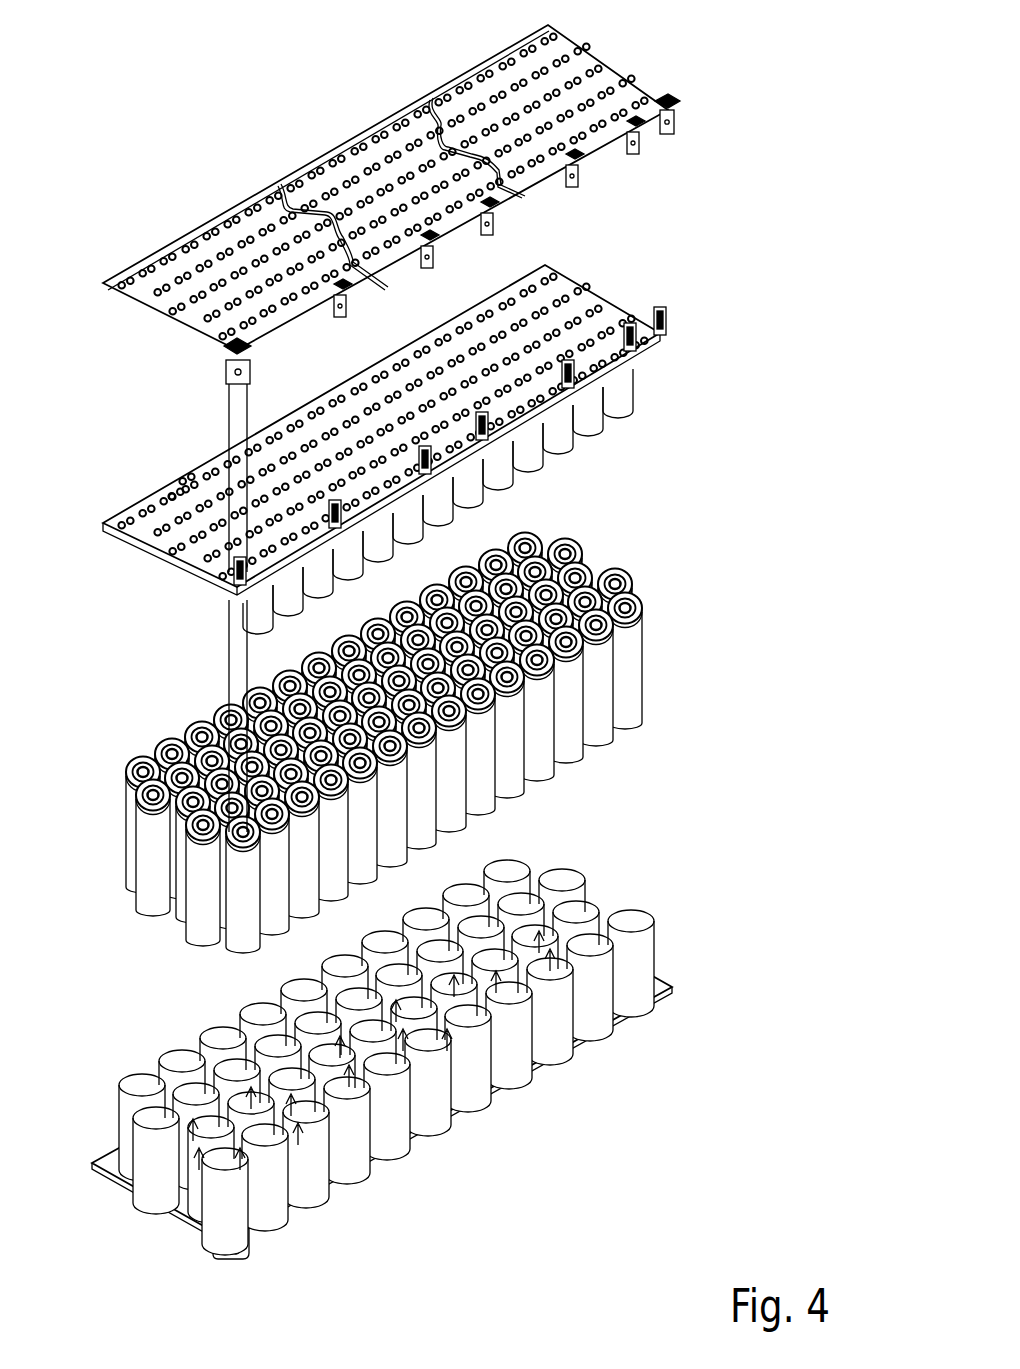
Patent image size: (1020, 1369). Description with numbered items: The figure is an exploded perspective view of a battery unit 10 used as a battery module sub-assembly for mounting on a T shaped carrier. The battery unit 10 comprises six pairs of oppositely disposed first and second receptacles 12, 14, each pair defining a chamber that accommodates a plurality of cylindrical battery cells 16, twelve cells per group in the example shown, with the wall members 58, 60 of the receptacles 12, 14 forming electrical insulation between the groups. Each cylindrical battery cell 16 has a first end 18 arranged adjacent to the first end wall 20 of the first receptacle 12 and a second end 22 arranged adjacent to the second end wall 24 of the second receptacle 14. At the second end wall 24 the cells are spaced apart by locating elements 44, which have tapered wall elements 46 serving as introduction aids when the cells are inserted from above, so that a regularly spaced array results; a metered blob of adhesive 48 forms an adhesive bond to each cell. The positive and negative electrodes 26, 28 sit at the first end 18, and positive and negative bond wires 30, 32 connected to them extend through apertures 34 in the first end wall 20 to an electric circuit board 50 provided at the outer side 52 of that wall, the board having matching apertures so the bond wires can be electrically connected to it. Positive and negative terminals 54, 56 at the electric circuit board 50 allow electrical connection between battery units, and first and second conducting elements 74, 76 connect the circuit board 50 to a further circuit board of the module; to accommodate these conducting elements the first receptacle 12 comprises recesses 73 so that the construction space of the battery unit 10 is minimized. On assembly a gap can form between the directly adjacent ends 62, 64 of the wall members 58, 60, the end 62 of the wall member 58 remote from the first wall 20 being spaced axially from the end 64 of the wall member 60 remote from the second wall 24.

The battery unit 10 is at (756, 215).
The first receptacle 12 is at (605, 312).
The second receptacle 14 is at (678, 991).
The cylindrical battery cells 16 is at (632, 700).
The first end 18 is at (640, 598).
The first end wall 20 is at (126, 498).
The second end 22 is at (578, 762).
The second end wall 24 is at (590, 1027).
The positive electrode 26 is at (230, 718).
The negative electrode 28 is at (153, 794).
The positive bond wire 30 is at (242, 334).
The negative bond wire 32 is at (226, 341).
The apertures 34 is at (172, 490).
The locating elements 44 is at (576, 940).
The tapered wall elements 46 is at (312, 1105).
The adhesive 48 is at (462, 958).
The electric circuit board 50 is at (585, 62).
The outer side 52 is at (666, 366).
The positive terminal 54 is at (690, 108).
The negative terminal 56 is at (228, 374).
The wall member 58 is at (612, 412).
The wall member 60 is at (656, 984).
The end 62 is at (586, 440).
The end 64 is at (638, 926).
The recesses 73 is at (688, 333).
The first conducting element 74 is at (634, 152).
The second conducting element 76 is at (446, 248).